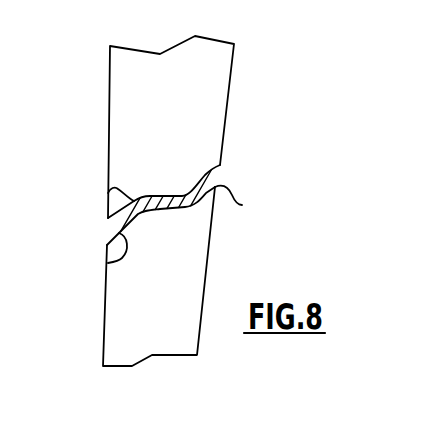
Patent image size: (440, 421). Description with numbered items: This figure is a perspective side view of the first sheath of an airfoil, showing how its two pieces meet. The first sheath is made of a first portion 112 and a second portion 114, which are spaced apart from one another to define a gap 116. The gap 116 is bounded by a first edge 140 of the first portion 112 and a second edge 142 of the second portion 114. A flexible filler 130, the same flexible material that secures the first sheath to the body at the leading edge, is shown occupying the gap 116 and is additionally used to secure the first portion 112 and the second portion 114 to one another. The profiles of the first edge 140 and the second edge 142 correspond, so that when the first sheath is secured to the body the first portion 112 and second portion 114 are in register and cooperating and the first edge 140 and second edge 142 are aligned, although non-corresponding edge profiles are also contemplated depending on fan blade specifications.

The first portion 112 is at (227, 110).
The second portion 114 is at (209, 253).
The filler 130 is at (218, 178).
The gap 116 is at (242, 205).
The first edge 140 is at (108, 195).
The second edge 142 is at (115, 262).